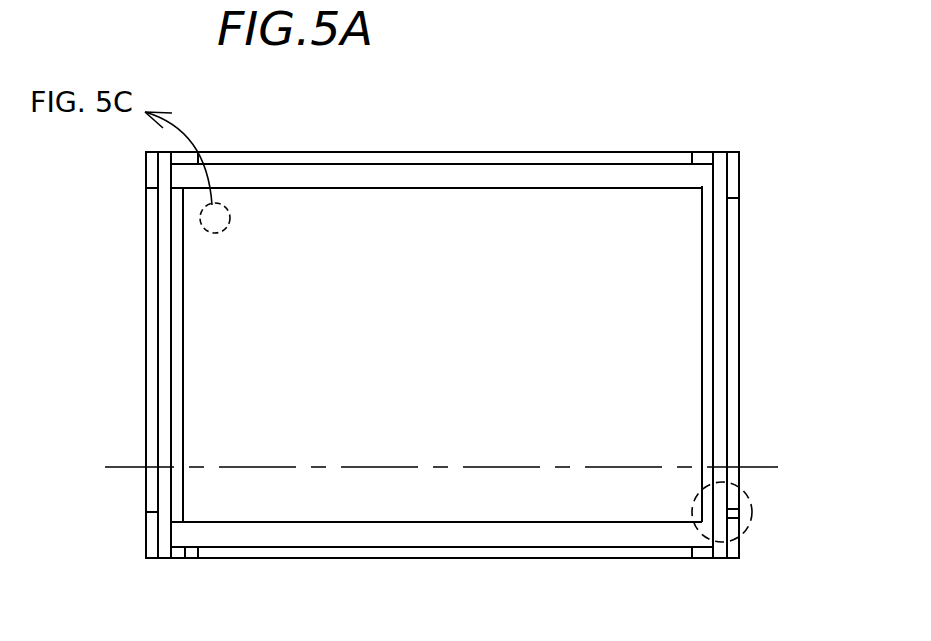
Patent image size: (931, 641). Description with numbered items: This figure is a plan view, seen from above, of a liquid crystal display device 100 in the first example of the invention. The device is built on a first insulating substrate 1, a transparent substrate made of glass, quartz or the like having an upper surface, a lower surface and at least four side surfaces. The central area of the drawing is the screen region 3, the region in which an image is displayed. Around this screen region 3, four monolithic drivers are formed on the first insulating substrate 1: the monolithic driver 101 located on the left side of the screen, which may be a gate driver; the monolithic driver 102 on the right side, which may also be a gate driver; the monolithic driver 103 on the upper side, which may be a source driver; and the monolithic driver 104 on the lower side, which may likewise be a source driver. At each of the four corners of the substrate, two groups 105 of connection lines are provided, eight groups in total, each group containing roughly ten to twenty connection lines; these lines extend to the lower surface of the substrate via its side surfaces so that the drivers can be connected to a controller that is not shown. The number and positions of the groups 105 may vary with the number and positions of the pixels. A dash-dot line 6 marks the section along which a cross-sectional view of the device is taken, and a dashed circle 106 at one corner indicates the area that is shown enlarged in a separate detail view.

The liquid crystal display device 100 is at (638, 107).
The first insulating substrate 1 is at (737, 305).
The screen region 3 is at (205, 293).
The monolithic driver 101 is at (182, 410).
The monolithic driver 102 is at (710, 385).
The monolithic driver 103 is at (407, 170).
The monolithic driver 104 is at (445, 540).
The group of connection lines 105 is at (703, 153).
The corner detail region 106 is at (748, 530).
The line 6-6' 6 is at (448, 469).